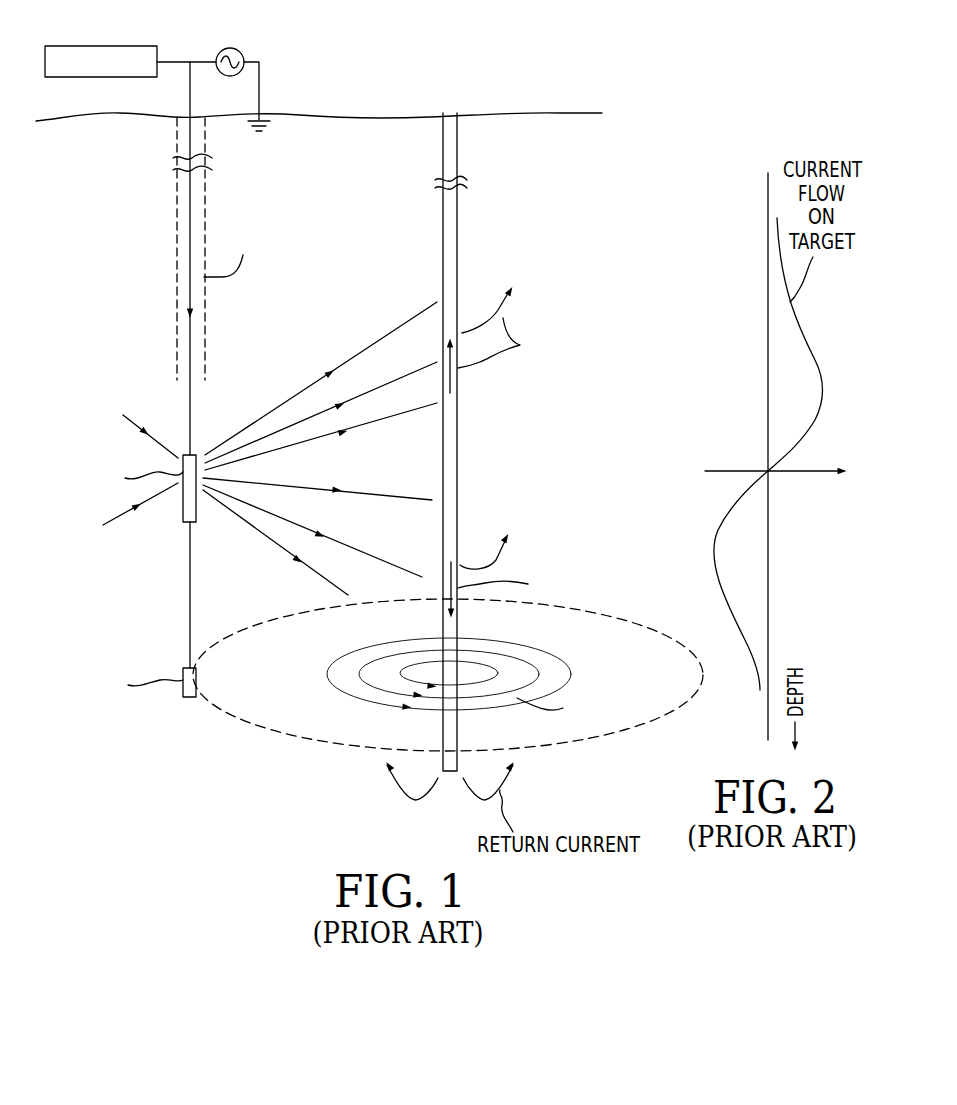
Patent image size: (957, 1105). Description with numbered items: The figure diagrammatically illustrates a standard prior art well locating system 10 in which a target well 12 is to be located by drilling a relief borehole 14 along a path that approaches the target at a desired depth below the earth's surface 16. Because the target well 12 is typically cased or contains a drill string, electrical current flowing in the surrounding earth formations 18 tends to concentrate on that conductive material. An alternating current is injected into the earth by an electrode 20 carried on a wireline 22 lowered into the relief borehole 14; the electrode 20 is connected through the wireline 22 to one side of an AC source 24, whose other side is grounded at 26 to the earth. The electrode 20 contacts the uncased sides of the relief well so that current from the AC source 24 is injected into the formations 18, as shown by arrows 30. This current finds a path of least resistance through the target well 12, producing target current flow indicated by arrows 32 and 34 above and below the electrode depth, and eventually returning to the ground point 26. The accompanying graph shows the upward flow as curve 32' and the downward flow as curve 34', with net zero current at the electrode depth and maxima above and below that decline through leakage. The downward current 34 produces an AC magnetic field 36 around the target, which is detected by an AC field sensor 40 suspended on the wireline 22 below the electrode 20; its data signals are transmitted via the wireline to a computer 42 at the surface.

In FIG. 1, the well locating system 10 is at (119, 391).
In FIG. 1, the target well 12 is at (457, 228).
In FIG. 1, the relief borehole 14 is at (177, 212).
In FIG. 1, the earth's surface 16 is at (560, 113).
In FIG. 1, the earth formations 18 is at (598, 436).
In FIG. 1, the electrode 20 is at (193, 455).
In FIG. 1, the wireline 22 is at (190, 337).
In FIG. 1, the AC source 24 is at (242, 50).
In FIG. 1, the ground 26 is at (261, 116).
In FIG. 1, the injected current arrows 30 is at (310, 432).
In FIG. 1, the upward target current flow 32 is at (564, 350).
In FIG. 1, the downward target current flow 34 is at (542, 584).
In FIG. 1, the AC magnetic field 36 is at (369, 688).
In FIG. 1, the AC field sensor 40 is at (183, 672).
In FIG. 1, the computer 42 is at (103, 46).
In FIG. 2, the upward current flow curve 32' is at (817, 344).
In FIG. 2, the downward current flow curve 34' is at (714, 580).